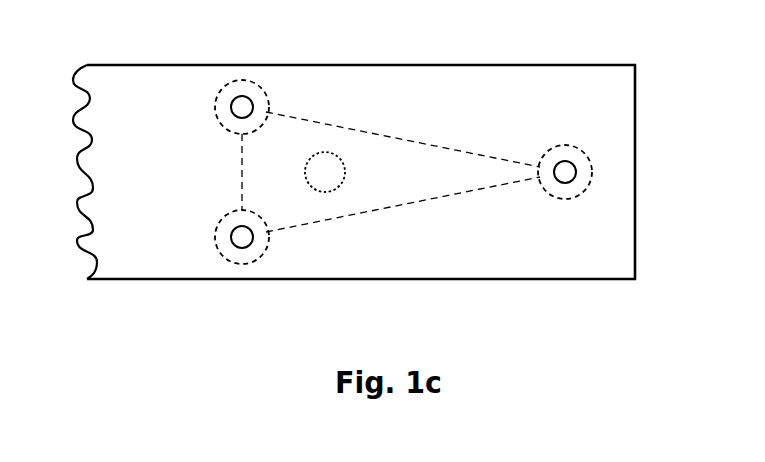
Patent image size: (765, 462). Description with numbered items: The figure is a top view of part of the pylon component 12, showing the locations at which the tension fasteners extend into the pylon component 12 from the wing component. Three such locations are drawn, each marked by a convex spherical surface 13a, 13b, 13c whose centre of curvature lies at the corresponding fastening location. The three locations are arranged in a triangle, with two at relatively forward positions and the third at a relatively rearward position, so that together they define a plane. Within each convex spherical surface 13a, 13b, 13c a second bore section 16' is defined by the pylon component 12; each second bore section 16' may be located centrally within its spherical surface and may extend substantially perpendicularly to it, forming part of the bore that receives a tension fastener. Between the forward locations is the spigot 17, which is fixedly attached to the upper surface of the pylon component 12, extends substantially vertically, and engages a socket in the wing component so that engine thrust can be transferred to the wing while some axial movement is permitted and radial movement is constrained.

The pylon component 12 is at (166, 181).
The convex spherical surface 13a is at (248, 82).
The convex spherical surface 13b is at (222, 253).
The convex spherical surface 13c is at (566, 146).
The second bore section 16' is at (440, 171).
The spigot 17 is at (323, 163).